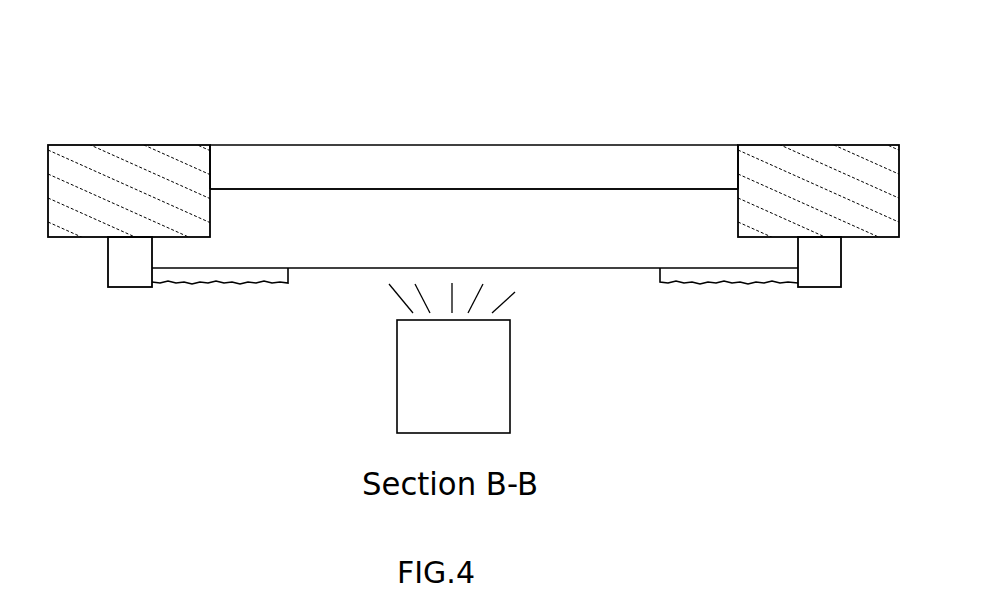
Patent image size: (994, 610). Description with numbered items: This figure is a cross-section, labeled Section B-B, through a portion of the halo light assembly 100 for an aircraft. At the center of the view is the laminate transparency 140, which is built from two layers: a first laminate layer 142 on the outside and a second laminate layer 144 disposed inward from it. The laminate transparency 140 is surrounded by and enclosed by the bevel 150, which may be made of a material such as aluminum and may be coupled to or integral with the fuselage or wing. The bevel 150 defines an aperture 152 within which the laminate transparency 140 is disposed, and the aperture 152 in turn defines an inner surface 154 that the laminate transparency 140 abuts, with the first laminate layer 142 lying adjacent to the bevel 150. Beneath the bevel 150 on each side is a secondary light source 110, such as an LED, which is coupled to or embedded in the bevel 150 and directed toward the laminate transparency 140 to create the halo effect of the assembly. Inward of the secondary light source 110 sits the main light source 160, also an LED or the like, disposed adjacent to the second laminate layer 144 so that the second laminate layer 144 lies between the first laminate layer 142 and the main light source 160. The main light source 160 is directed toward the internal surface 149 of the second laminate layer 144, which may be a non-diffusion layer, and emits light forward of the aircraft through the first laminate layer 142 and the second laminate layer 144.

The halo light assembly 100 is at (294, 41).
The secondary light source 110 is at (133, 256).
The laminate transparency 140 is at (489, 156).
The first laminate layer 142 is at (474, 167).
The second laminate layer 144 is at (475, 285).
The internal surface 149 is at (627, 269).
The bevel 150 is at (88, 175).
The aperture 152 is at (210, 167).
The inner surface 154 is at (736, 174).
The main light source 160 is at (452, 358).